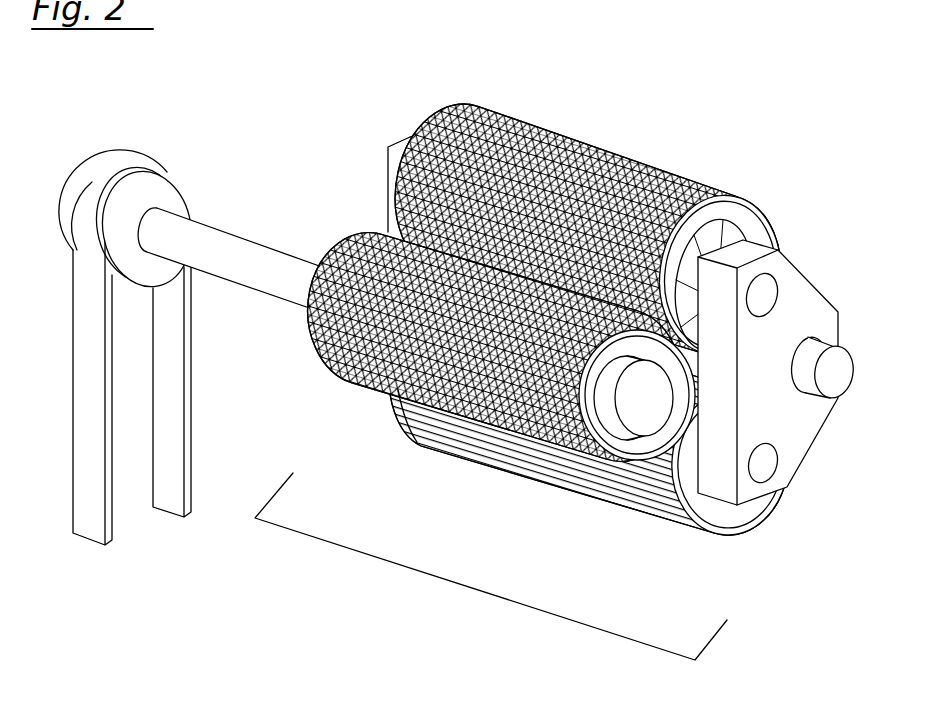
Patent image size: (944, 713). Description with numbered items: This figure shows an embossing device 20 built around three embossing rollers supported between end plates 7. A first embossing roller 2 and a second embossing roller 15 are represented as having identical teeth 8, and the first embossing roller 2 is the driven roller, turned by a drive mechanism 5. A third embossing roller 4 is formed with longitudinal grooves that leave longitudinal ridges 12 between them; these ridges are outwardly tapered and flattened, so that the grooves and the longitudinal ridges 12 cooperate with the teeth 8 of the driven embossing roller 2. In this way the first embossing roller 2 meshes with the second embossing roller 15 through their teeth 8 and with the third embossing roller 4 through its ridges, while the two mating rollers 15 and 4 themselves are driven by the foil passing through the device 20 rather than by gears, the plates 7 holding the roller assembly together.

The first embossing roller 2 is at (373, 398).
The third embossing roller 4 is at (633, 528).
The drive mechanism 5 is at (143, 170).
The end plate 7 is at (405, 145).
The teeth 8 is at (692, 172).
The longitudinal ridges 12 is at (432, 428).
The second embossing roller 15 is at (662, 150).
The device 20 is at (460, 588).